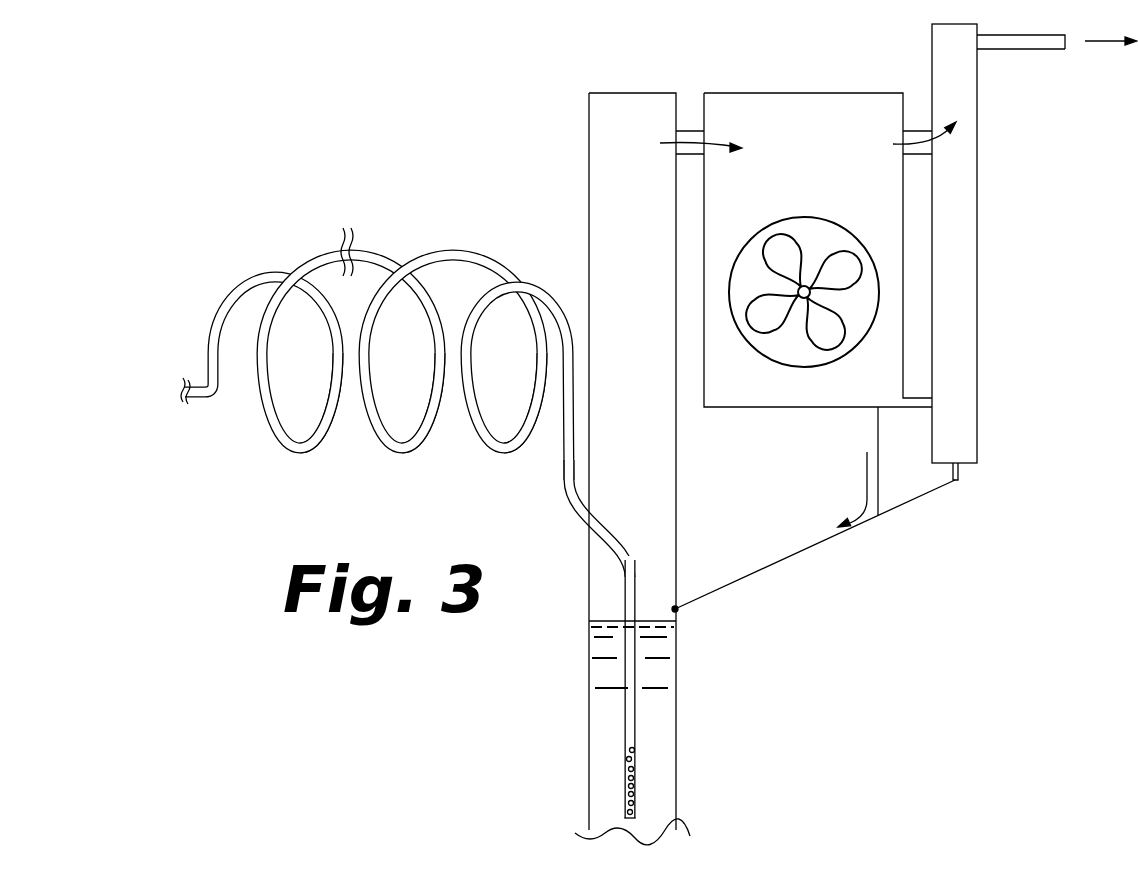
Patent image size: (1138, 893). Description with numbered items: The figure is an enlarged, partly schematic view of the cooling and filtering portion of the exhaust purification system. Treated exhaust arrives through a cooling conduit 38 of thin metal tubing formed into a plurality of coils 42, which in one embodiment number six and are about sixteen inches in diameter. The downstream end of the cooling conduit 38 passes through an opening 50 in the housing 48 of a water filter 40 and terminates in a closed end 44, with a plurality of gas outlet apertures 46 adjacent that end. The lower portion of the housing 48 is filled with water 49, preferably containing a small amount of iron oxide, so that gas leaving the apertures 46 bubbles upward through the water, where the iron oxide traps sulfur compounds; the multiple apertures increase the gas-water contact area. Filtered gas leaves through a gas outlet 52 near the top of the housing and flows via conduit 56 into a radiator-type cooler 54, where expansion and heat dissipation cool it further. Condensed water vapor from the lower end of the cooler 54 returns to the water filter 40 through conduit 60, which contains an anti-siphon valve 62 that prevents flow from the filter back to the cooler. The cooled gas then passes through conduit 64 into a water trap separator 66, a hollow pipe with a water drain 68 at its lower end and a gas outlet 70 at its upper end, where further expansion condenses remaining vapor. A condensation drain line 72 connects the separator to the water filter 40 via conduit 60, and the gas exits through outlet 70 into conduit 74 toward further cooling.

The cooling conduit 38 is at (408, 499).
The water filter 40 is at (583, 448).
The coils 42 is at (370, 251).
The closed end 44 is at (630, 819).
The gas outlet apertures 46 is at (627, 760).
The housing 48 is at (590, 563).
The water 49 is at (660, 709).
The opening 50 is at (588, 507).
The gas outlet 52 is at (670, 153).
The cooler 54 is at (773, 92).
The conduit 56 is at (687, 130).
The conduit 60 is at (805, 553).
The anti-siphon valve 62 is at (677, 610).
The conduit 64 is at (920, 128).
The water trap separator 66 is at (978, 262).
The water drain 68 is at (960, 478).
The gas outlet 70 is at (980, 50).
The condensation drain line 72 is at (910, 505).
The conduit 74 is at (1047, 50).